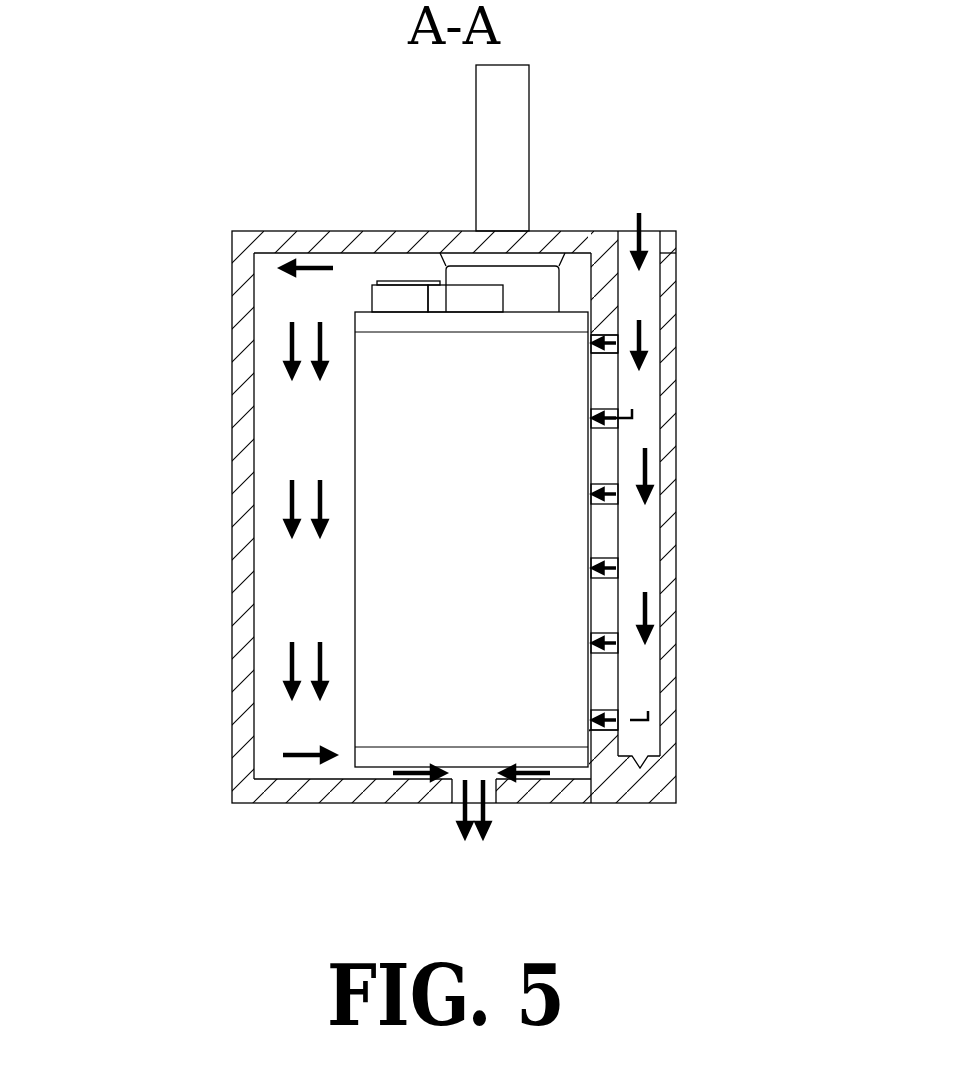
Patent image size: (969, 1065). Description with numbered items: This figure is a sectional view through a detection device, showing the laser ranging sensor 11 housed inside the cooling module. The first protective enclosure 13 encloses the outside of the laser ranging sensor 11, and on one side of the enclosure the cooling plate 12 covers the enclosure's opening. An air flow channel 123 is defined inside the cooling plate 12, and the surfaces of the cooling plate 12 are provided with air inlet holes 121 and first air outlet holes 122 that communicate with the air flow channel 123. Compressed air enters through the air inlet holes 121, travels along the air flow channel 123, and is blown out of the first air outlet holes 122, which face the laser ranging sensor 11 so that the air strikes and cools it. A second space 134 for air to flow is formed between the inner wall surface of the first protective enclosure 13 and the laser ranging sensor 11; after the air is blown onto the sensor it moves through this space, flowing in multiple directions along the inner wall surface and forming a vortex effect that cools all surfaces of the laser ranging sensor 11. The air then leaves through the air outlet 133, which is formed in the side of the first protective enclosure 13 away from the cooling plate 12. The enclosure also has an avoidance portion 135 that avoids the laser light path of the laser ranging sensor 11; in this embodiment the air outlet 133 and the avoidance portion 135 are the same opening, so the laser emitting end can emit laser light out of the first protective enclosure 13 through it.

The laser ranging sensor 11 is at (397, 698).
The cooling plate 12 is at (677, 322).
The air inlet holes 121 is at (666, 207).
The first air outlet holes 122 is at (636, 517).
The air flow channel 123 is at (667, 431).
The first protective enclosure 13 is at (252, 430).
The air outlet 133 is at (424, 857).
The second space 134 is at (275, 573).
The avoidance portion 135 is at (446, 825).